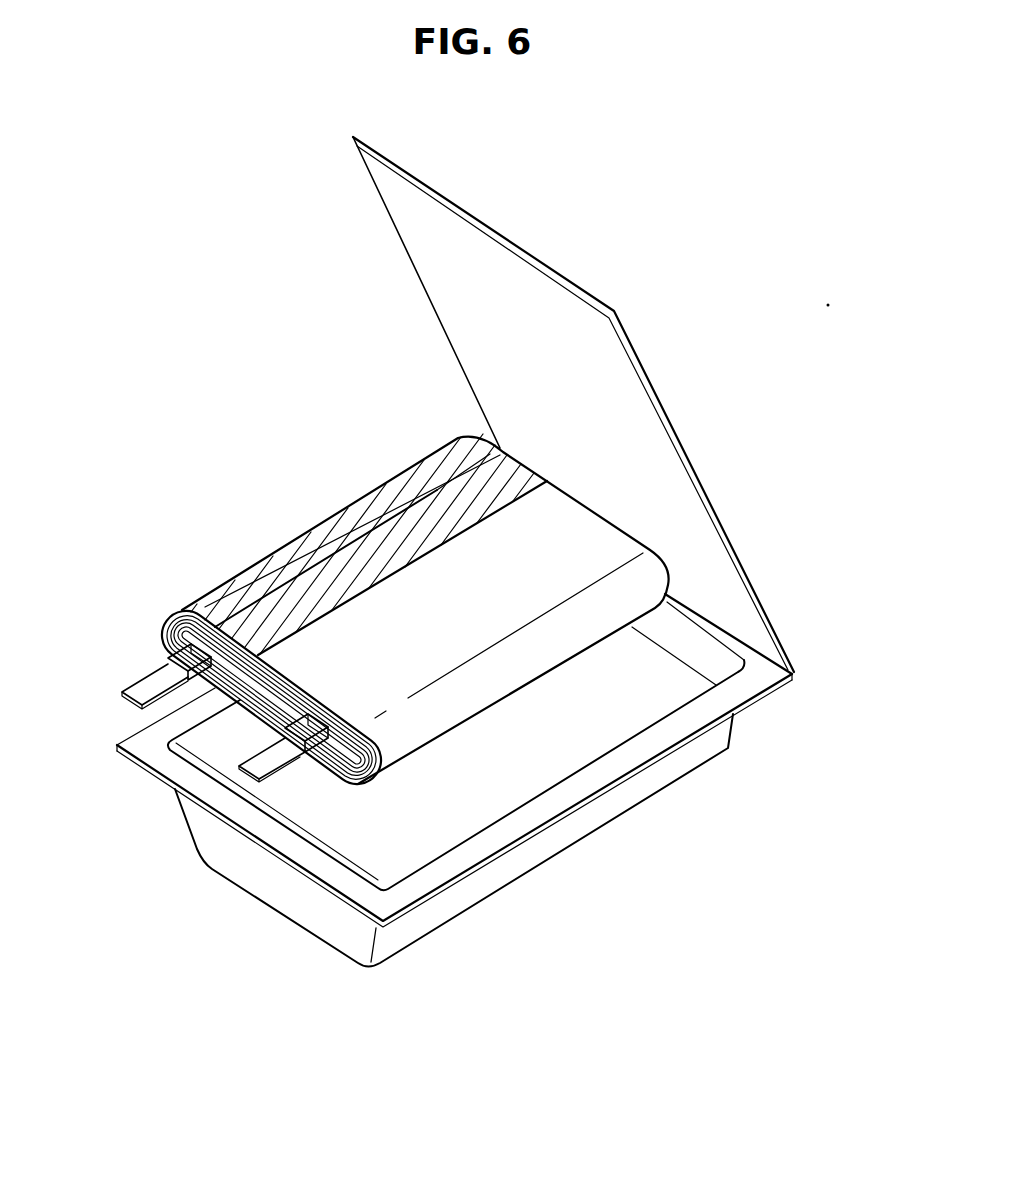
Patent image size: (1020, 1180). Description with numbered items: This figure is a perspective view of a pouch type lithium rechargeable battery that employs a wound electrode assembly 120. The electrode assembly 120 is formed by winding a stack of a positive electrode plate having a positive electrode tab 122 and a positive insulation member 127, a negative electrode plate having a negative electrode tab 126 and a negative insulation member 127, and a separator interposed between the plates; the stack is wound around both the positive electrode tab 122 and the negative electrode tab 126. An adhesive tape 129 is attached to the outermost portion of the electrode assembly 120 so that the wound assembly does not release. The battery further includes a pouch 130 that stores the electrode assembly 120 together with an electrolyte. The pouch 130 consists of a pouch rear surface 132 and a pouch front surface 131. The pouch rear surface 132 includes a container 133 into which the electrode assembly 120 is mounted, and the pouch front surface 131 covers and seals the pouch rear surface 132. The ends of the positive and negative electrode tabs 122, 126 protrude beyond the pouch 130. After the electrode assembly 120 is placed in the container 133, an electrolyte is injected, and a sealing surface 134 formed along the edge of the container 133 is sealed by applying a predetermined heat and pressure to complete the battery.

The electrode assembly 120 is at (238, 516).
The positive electrode tab 122 is at (148, 678).
The negative electrode tab 126 is at (250, 769).
The insulation member 127 is at (172, 648).
The adhesive tape 129 is at (424, 512).
The pouch 130 is at (522, 569).
The pouch front surface 131 is at (765, 637).
The pouch rear surface 132 is at (758, 683).
The container 133 is at (528, 769).
The sealing surface 134 is at (447, 862).